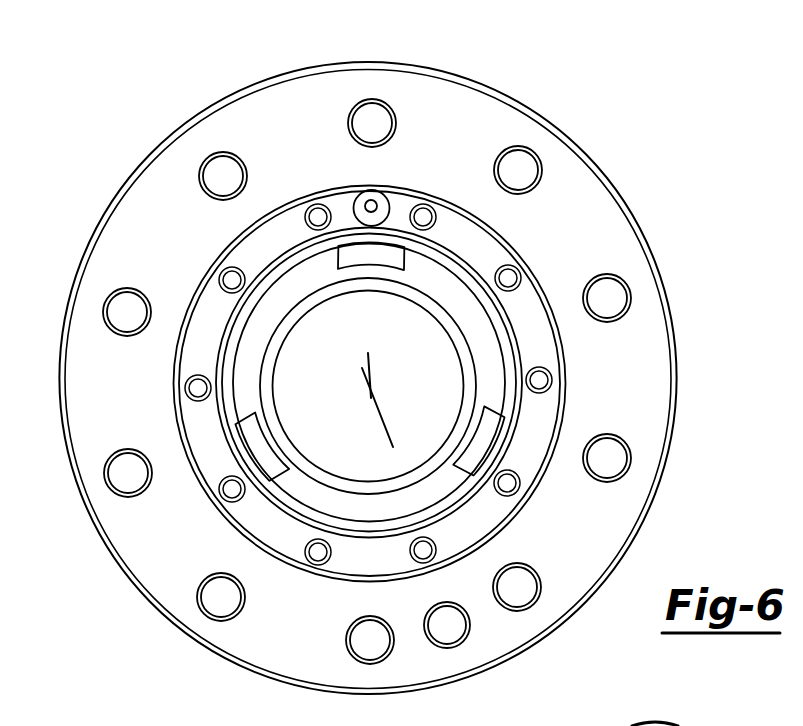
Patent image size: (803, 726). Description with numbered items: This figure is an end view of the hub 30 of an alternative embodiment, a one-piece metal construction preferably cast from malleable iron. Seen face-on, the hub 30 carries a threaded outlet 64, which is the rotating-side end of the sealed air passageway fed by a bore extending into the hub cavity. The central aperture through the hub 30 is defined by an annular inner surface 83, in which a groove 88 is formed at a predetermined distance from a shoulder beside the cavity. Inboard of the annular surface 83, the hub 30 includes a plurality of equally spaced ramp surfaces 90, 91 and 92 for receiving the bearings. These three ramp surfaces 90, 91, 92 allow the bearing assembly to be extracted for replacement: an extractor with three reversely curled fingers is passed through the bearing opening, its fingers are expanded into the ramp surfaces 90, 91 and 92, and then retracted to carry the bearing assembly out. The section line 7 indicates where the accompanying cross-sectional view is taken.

The hub 30 is at (700, 186).
The section line 7- 7 is at (372, 117).
The outlet 64 is at (384, 197).
The annular inner surface 83 is at (470, 366).
The ramp surface 90 is at (375, 266).
The ramp surface 91 is at (262, 444).
The ramp surface 92 is at (473, 431).
The groove 88 is at (593, 725).